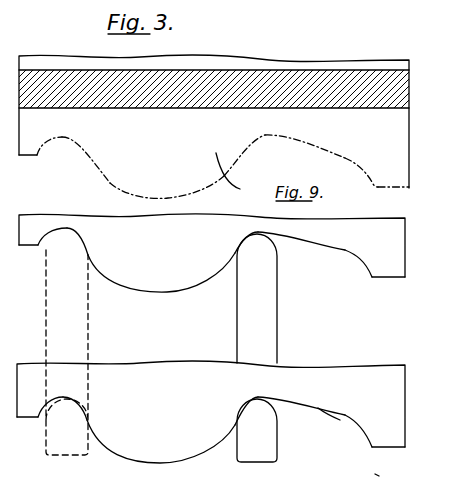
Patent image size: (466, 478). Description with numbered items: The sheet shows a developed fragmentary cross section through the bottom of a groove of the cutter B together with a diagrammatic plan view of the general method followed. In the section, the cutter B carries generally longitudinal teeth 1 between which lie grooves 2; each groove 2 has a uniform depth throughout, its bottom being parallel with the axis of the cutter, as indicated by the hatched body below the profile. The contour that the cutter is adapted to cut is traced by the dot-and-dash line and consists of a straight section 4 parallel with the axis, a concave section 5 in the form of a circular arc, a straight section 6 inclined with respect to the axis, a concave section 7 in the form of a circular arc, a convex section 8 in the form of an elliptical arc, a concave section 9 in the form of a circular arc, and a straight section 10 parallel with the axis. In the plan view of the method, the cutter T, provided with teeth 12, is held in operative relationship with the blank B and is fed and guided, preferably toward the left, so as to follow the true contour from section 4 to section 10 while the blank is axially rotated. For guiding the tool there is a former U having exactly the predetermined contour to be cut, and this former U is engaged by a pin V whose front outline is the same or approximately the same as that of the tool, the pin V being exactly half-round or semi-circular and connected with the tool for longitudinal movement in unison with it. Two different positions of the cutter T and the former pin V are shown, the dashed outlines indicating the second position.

In FIG. 9, the tooth 1 is at (336, 415).
In FIG. 3, the groove 2 is at (233, 177).
In FIG. 3, the straight section 4 is at (390, 186).
In FIG. 9, the straight section 4 is at (391, 275).
In FIG. 3, the concave section 5 is at (365, 172).
In FIG. 9, the concave section 5 is at (362, 257).
In FIG. 3, the straight section 6 is at (312, 152).
In FIG. 9, the straight section 6 is at (311, 242).
In FIG. 3, the concave section 7 is at (244, 152).
In FIG. 9, the concave section 7 is at (255, 232).
In FIG. 3, the convex section 8 is at (167, 198).
In FIG. 9, the convex section 8 is at (195, 290).
In FIG. 3, the concave section 9 is at (78, 138).
In FIG. 9, the concave section 9 is at (70, 227).
In FIG. 3, the straight section 10 is at (30, 150).
In FIG. 9, the straight section 10 is at (27, 246).
In FIG. 9, the teeth of the cutter T 12 is at (365, 471).
In FIG. 3, the cutter or blank B is at (306, 72).
In FIG. 9, the cutter or blank B is at (394, 393).
In FIG. 9, the former U is at (400, 242).
In FIG. 9, the pin V is at (257, 298).
In FIG. 9, the cutter or tool T is at (257, 430).